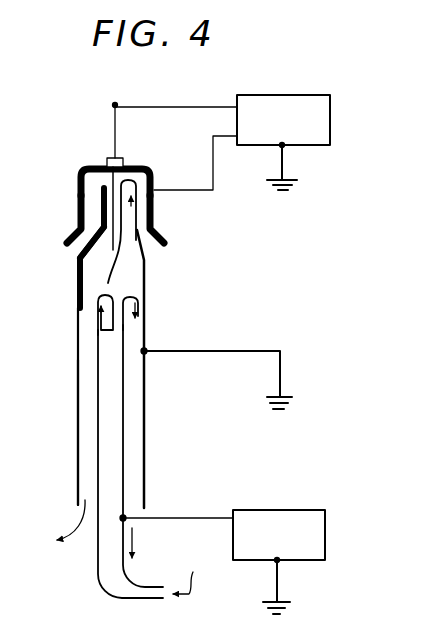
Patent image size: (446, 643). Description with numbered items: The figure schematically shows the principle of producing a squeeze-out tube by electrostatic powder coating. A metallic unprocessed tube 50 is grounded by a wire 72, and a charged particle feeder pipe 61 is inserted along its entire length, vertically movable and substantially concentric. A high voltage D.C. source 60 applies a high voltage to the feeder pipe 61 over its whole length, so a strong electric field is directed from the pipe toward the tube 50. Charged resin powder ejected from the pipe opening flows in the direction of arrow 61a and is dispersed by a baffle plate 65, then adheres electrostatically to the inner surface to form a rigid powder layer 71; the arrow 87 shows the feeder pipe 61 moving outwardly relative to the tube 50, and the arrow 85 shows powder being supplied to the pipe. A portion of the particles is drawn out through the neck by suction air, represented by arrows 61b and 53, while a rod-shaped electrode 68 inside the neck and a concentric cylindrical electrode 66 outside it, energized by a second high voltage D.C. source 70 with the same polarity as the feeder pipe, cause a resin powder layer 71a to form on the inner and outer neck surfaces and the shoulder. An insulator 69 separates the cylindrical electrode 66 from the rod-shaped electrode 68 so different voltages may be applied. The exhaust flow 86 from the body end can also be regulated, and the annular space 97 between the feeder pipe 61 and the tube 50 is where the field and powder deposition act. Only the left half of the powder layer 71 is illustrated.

The unprocessed tube 50 is at (78, 358).
The suction flow 53 is at (170, 256).
The high voltage D.C. source 60 is at (280, 510).
The charged particle feeder pipe 61 is at (100, 418).
The arrow 61a is at (140, 300).
The arrow 61b is at (122, 220).
The baffle plate 65 is at (100, 295).
The cylindrical electrode 66 is at (77, 205).
The rod-shaped electrode 68 is at (80, 171).
The insulator 69 is at (110, 160).
The high voltage D.C. source 70 is at (288, 95).
The powder layer 71 is at (78, 282).
The resin powder layer 71a is at (90, 237).
The wire 72 is at (268, 351).
The arrow 85 is at (199, 569).
The exhaust flow 86 is at (48, 527).
The arrow 87 is at (133, 535).
The annular space 97 is at (88, 383).